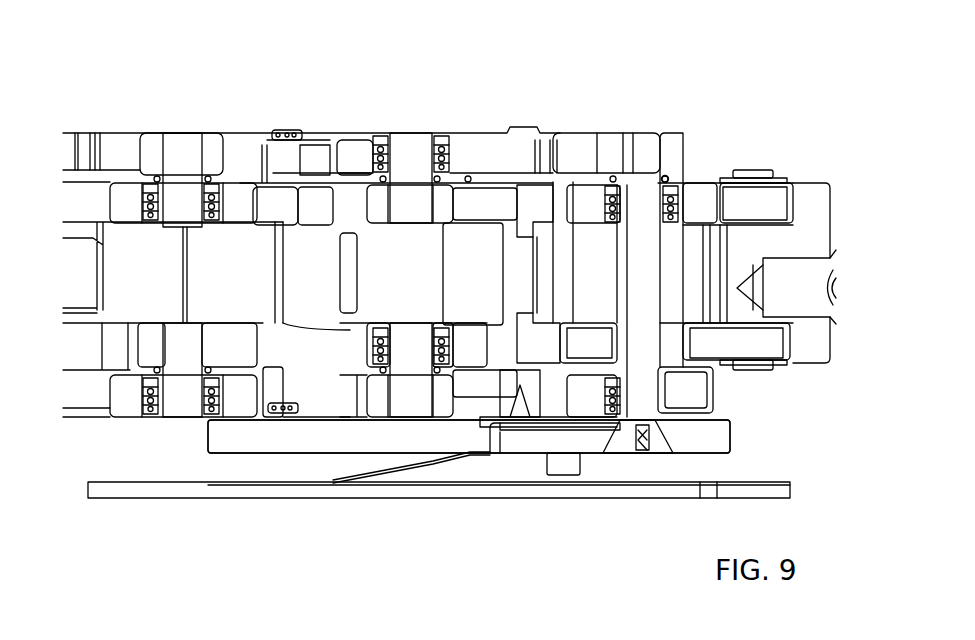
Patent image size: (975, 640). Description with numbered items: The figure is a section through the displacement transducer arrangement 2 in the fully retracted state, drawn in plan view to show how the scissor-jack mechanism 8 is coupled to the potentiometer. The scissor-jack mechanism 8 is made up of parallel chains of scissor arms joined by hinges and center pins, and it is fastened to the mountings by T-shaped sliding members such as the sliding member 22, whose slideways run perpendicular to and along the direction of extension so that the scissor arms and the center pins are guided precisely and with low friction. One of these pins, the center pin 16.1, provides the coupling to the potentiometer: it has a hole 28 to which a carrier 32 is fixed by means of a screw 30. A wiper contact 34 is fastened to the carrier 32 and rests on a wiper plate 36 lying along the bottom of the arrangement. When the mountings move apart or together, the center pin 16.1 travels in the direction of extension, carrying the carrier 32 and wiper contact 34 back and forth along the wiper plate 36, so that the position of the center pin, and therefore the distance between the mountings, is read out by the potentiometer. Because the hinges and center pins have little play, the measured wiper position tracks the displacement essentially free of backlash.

The displacement transducer arrangement 2 is at (108, 84).
The scissor-jack mechanism 8 is at (263, 130).
The sliding member 22 is at (592, 257).
The center pin 16.1 is at (662, 182).
The hole 28 is at (680, 376).
The screw 30 is at (727, 423).
The carrier 32 is at (548, 442).
The wiper contact 34 is at (490, 455).
The wiper plate 36 is at (247, 488).